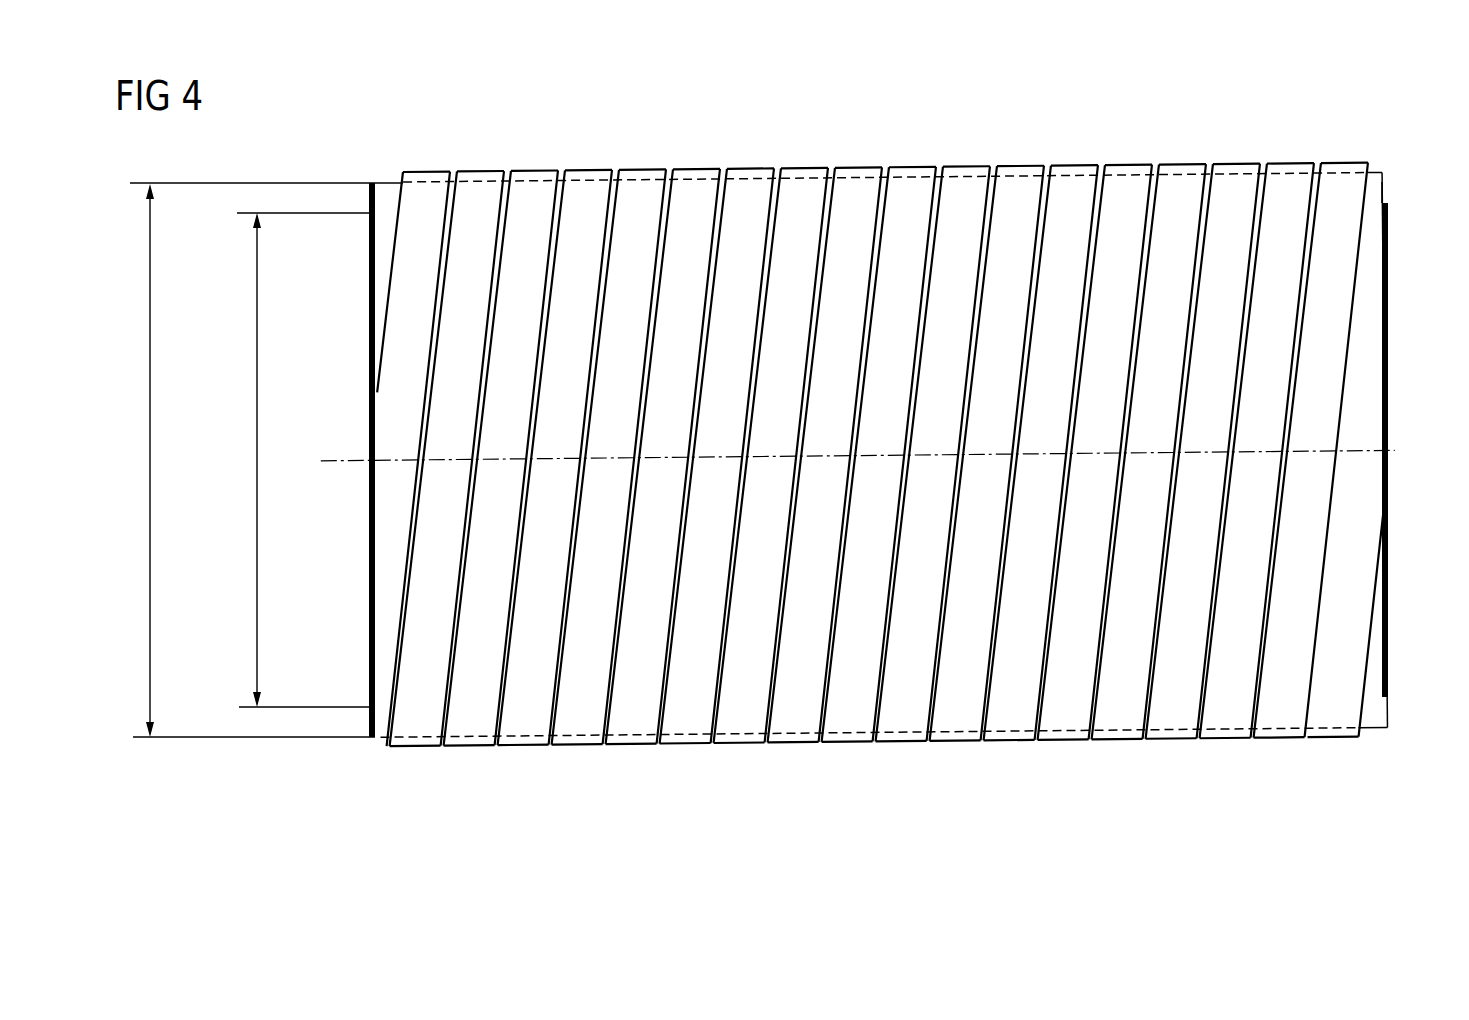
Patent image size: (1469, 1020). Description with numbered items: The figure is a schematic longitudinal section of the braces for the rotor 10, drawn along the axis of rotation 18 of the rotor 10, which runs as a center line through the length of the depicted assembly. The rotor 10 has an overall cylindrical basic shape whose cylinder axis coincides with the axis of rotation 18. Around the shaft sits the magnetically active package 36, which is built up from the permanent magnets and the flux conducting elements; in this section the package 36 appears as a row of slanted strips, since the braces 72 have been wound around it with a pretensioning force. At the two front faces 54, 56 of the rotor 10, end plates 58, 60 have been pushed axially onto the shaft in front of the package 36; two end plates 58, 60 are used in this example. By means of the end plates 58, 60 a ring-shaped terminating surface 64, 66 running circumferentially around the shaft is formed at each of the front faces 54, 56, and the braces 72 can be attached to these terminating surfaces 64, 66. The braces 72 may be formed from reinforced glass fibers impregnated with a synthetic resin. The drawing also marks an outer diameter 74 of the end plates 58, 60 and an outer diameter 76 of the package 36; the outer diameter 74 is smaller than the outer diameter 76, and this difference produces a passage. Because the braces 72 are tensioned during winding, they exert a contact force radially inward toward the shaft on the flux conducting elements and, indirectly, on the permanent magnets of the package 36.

The rotor 10 is at (931, 117).
The axis of rotation 18 is at (656, 458).
The magnetically active package 36 is at (650, 180).
The front face 54 is at (1408, 265).
The front face 56 is at (226, 303).
The end plate 58 is at (1388, 479).
The end plate 60 is at (369, 565).
The ring-shaped terminating surface 64 is at (1388, 419).
The ring-shaped terminating surface 66 is at (369, 491).
The braces 72 is at (589, 171).
The outer diameter of the end plates 74 is at (257, 584).
The outer diameter of the package 76 is at (151, 340).